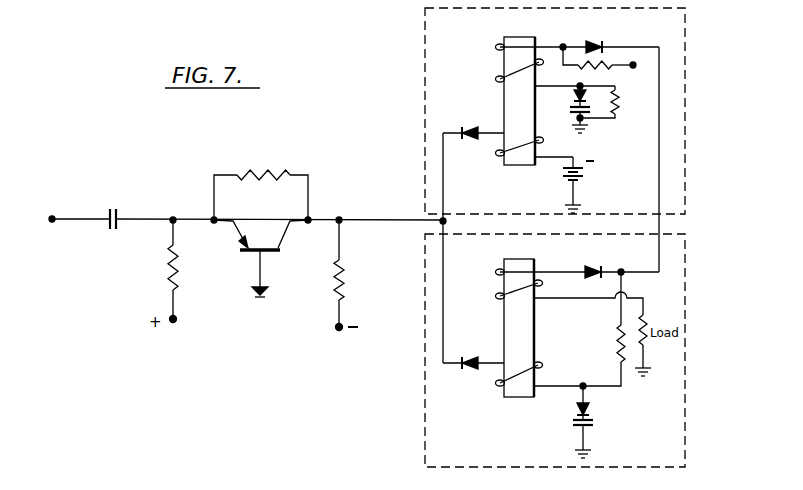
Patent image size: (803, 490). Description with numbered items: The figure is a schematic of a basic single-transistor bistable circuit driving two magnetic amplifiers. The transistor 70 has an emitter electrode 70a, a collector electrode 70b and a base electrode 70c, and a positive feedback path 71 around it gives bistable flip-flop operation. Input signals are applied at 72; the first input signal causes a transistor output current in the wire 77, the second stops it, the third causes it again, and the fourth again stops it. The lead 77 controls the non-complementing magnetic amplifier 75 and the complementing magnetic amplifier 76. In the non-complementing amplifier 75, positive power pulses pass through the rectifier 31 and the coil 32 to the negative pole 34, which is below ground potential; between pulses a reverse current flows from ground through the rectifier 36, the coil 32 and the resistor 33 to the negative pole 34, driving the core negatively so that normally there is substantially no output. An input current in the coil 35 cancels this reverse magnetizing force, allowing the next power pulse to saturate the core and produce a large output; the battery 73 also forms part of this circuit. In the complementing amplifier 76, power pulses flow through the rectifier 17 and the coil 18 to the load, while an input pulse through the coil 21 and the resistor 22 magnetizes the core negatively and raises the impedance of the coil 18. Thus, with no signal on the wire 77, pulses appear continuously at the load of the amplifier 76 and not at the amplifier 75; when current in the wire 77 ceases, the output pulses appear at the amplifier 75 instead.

The input 72 is at (68, 219).
The transistor 70 is at (265, 251).
The emitter electrode 70a is at (249, 238).
The collector electrode 70b is at (289, 229).
The base electrode 70c is at (262, 273).
The positive feedback path 71 is at (277, 166).
The wire 77 is at (368, 226).
The non-complementing magnetic amplifier 75 is at (425, 80).
The complementing magnetic amplifier 76 is at (685, 428).
The coil 32 is at (496, 49).
The coil 35 is at (497, 155).
The rectifier 31 is at (600, 40).
The negative pole 34 is at (642, 64).
The resistor 33 is at (606, 73).
The rectifier 36 is at (573, 108).
The battery 73 is at (588, 181).
The coil 18 is at (497, 275).
The rectifier 17 is at (590, 268).
The resistor 22 is at (614, 350).
The coil 21 is at (497, 386).